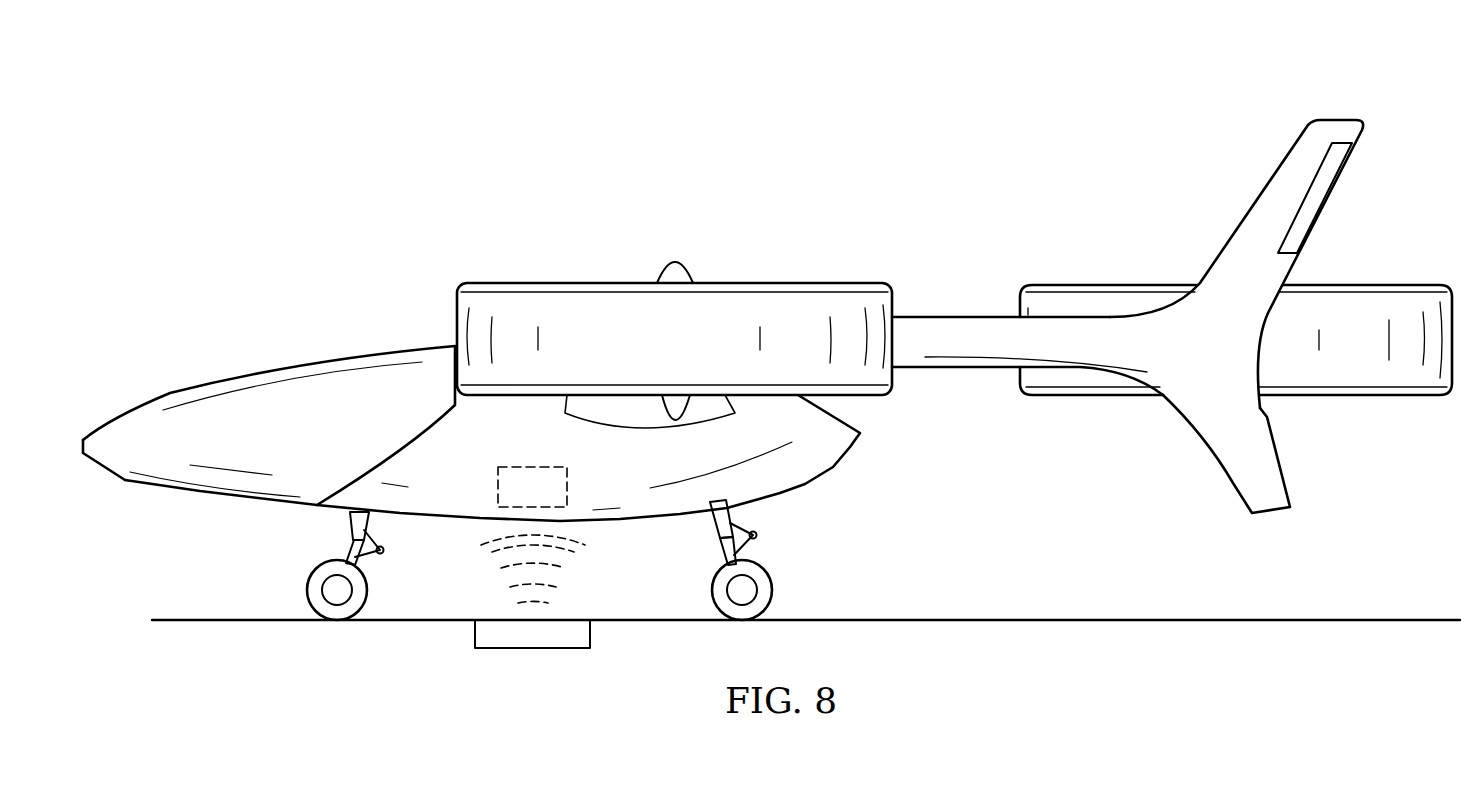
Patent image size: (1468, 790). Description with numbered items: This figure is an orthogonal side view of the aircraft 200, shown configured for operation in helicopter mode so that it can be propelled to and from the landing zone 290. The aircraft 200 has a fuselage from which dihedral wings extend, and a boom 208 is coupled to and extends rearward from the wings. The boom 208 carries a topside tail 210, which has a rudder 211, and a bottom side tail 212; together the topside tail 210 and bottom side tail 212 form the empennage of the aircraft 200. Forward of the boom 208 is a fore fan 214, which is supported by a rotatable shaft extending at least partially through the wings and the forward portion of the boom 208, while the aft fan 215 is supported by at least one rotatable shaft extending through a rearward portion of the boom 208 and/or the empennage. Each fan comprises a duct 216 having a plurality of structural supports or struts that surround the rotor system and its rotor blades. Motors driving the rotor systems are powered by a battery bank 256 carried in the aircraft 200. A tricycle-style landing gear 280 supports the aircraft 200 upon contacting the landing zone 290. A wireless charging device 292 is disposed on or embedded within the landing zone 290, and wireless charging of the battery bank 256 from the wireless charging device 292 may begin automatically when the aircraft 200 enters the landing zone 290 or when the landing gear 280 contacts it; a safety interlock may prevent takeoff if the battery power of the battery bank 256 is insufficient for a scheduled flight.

The aircraft 200 is at (470, 92).
The boom 208 is at (950, 316).
The topside tail 210 is at (1340, 121).
The rudder 211 is at (1313, 206).
The bottom side tail 212 is at (1272, 511).
The fore fan 214 is at (591, 276).
The aft fan 215 is at (1360, 405).
The duct 216 is at (627, 420).
The battery bank 256 is at (498, 489).
The landing gear 280 is at (343, 541).
The landing zone 290 is at (967, 618).
The wireless charging device 292 is at (532, 650).